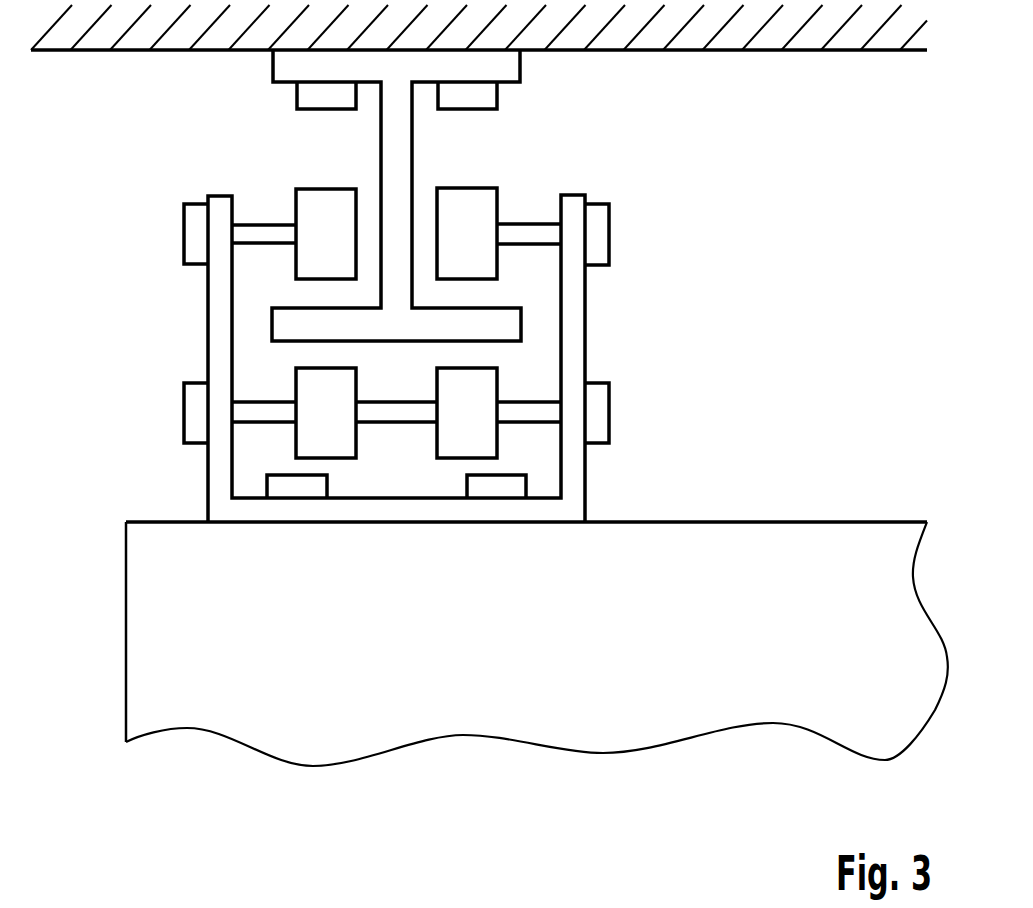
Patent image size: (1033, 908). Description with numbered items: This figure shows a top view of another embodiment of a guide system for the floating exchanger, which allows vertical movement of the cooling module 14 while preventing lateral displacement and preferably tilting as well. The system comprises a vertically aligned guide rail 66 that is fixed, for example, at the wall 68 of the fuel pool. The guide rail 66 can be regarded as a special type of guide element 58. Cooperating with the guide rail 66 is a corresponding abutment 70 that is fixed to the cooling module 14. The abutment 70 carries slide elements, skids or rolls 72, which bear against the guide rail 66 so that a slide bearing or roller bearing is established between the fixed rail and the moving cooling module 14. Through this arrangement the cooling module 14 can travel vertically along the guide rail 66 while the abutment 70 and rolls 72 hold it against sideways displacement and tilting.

The cooling module 14 is at (750, 492).
The guide element 58 is at (410, 195).
The guide rail 66 is at (413, 155).
The wall 68 is at (878, 52).
The abutment 70 is at (208, 334).
The rolls 72 is at (497, 205).